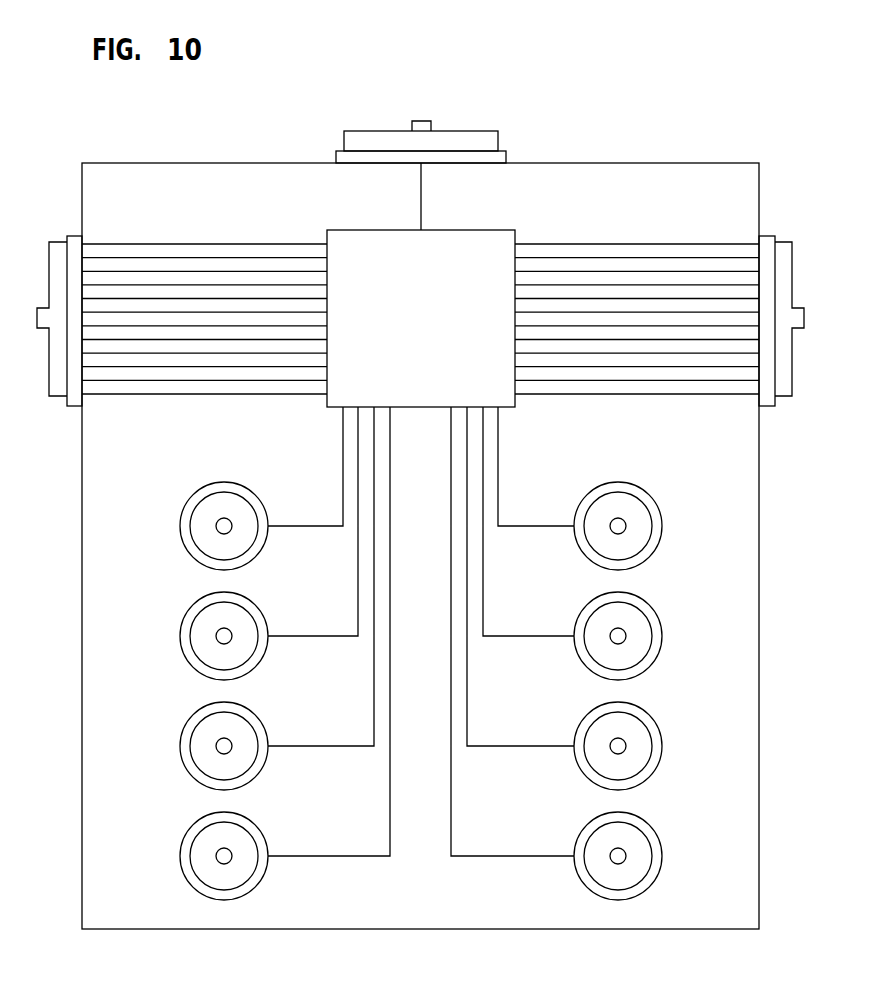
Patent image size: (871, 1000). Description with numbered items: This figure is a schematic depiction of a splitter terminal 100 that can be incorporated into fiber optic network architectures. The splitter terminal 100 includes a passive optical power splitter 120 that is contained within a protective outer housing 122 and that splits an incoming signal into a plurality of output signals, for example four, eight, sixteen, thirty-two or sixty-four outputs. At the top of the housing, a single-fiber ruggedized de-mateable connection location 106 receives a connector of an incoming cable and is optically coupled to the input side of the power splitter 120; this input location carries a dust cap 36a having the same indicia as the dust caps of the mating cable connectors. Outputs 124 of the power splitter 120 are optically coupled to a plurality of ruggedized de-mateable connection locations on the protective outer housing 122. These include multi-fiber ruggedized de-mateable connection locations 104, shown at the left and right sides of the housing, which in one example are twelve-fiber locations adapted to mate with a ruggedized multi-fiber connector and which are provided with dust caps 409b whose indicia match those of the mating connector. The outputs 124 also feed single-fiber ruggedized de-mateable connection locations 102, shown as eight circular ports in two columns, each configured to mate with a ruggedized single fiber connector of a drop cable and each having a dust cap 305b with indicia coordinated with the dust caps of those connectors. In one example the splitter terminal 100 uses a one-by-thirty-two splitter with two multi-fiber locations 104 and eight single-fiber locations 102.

The splitter terminal 100 is at (708, 82).
The dust cap 36a is at (464, 130).
The single-fiber ruggedized de-mateable connection location 106 is at (508, 160).
The optical power splitter 120 is at (500, 230).
The outputs 124 is at (286, 395).
The multi-fiber ruggedized de-mateable connection location 104 is at (78, 235).
The dust cap 409b is at (49, 270).
The single-fiber ruggedized de-mateable connection location 102 is at (185, 655).
The dust cap 305b is at (230, 632).
The protective outer housing 122 is at (760, 679).